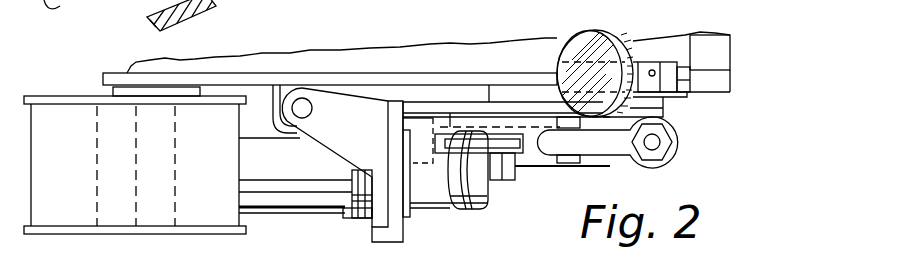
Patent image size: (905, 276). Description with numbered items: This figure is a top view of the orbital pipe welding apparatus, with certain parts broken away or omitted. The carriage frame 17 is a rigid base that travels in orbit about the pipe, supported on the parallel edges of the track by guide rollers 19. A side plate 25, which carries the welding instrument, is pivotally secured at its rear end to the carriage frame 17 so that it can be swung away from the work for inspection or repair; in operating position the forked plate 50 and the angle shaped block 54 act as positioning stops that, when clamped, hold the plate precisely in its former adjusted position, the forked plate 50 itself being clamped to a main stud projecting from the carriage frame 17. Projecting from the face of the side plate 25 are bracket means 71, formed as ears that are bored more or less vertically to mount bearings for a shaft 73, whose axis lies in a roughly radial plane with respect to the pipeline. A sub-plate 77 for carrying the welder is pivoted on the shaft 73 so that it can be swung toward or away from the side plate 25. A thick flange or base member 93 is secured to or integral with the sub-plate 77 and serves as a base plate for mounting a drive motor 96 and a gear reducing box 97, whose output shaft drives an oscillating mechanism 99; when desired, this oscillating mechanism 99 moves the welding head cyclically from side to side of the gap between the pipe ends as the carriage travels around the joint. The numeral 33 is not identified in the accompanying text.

The carriage frame 17 is at (720, 55).
The guide rollers 19 is at (222, 0).
The side plate 25 is at (410, 82).
The nut 33 is at (650, 62).
The forked plate 50 is at (722, 85).
The angle shaped block 54 is at (692, 62).
The bracket means 71 is at (277, 116).
The shaft 73 is at (312, 117).
The sub-plate 77 is at (521, 108).
The base member 93 is at (380, 229).
The drive motor 96 is at (272, 203).
The gear reducing box 97 is at (430, 210).
The oscillating mechanism 99 is at (460, 215).